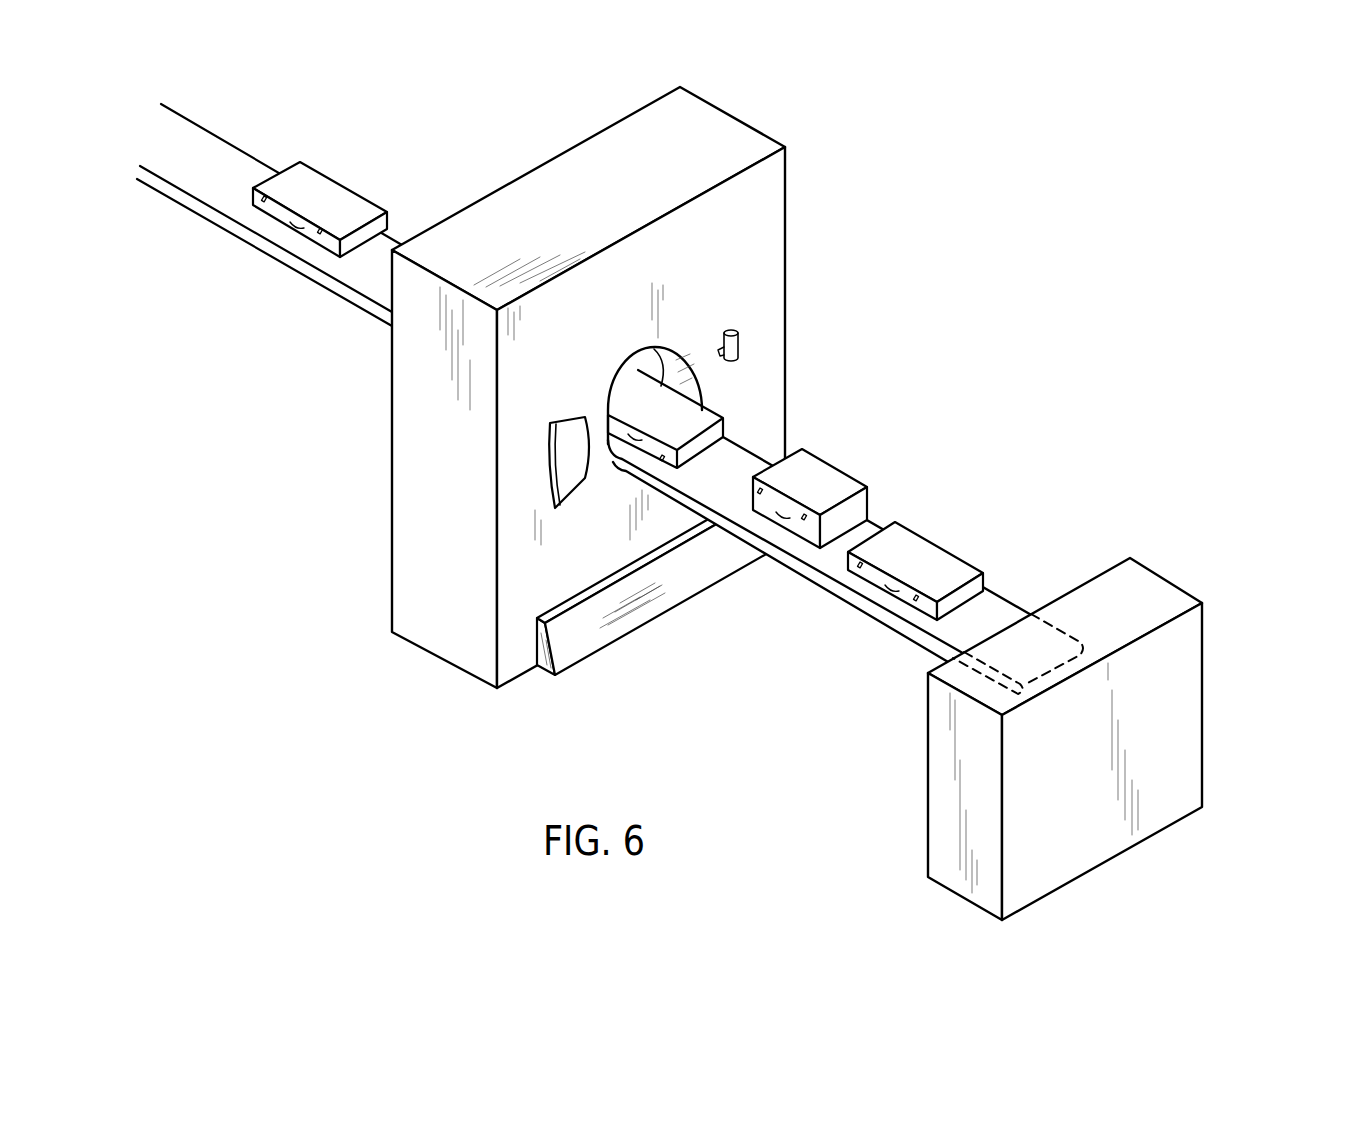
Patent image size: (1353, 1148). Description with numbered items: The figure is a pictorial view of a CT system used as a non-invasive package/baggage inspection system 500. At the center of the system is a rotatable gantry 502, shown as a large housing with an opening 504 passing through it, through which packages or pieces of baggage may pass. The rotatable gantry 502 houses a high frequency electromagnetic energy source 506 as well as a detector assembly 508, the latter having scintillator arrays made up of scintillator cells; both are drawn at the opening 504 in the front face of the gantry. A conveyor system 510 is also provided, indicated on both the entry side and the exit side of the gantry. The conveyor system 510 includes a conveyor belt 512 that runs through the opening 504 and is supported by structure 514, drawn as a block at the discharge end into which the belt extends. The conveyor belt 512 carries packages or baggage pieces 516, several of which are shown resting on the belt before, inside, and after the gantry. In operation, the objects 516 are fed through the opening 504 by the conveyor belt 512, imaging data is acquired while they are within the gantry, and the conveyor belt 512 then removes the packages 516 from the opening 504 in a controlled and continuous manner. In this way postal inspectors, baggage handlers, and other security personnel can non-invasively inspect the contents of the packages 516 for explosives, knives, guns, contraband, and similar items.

The package/baggage inspection system 500 is at (927, 415).
The rotatable gantry 502 is at (748, 252).
The opening 504 is at (676, 347).
The high frequency electromagnetic energy source 506 is at (740, 340).
The detector assembly 508 is at (572, 440).
The conveyor system 510 is at (165, 238).
The conveyor belt 512 is at (368, 273).
The structure 514 is at (1203, 684).
The packages or baggage pieces 516 is at (325, 203).